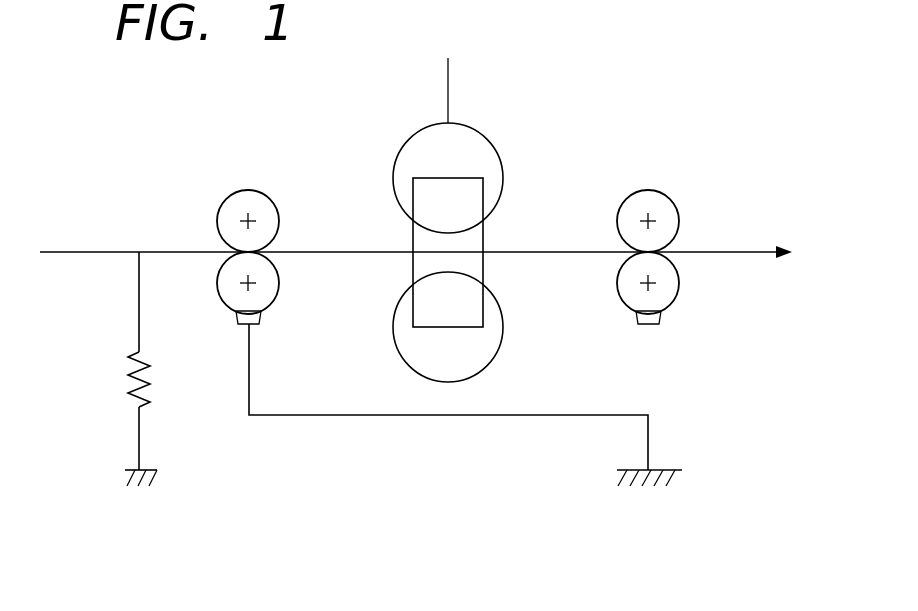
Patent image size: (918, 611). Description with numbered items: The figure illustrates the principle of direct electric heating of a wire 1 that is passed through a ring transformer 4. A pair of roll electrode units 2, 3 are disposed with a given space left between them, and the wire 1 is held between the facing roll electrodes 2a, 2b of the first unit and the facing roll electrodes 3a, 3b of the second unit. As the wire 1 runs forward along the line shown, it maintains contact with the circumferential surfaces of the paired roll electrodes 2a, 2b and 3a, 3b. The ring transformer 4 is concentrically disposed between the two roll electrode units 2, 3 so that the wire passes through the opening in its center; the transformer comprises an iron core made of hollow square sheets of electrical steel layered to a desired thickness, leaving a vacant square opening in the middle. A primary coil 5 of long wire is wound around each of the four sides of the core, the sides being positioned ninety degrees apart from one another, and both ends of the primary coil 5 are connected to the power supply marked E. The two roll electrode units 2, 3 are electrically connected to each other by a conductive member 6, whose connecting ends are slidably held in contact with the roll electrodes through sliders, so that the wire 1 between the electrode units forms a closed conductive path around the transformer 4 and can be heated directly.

The wire 1 is at (106, 251).
The roll electrode unit 2 is at (280, 219).
The roll electrode 2a is at (275, 218).
The roll electrode 2b is at (277, 290).
The roll electrode unit 3 is at (683, 220).
The roll electrode 3a is at (673, 215).
The roll electrode 3b is at (673, 288).
The ring transformer 4 is at (485, 195).
The primary coil 5 is at (497, 148).
The conductive member 6 is at (407, 415).